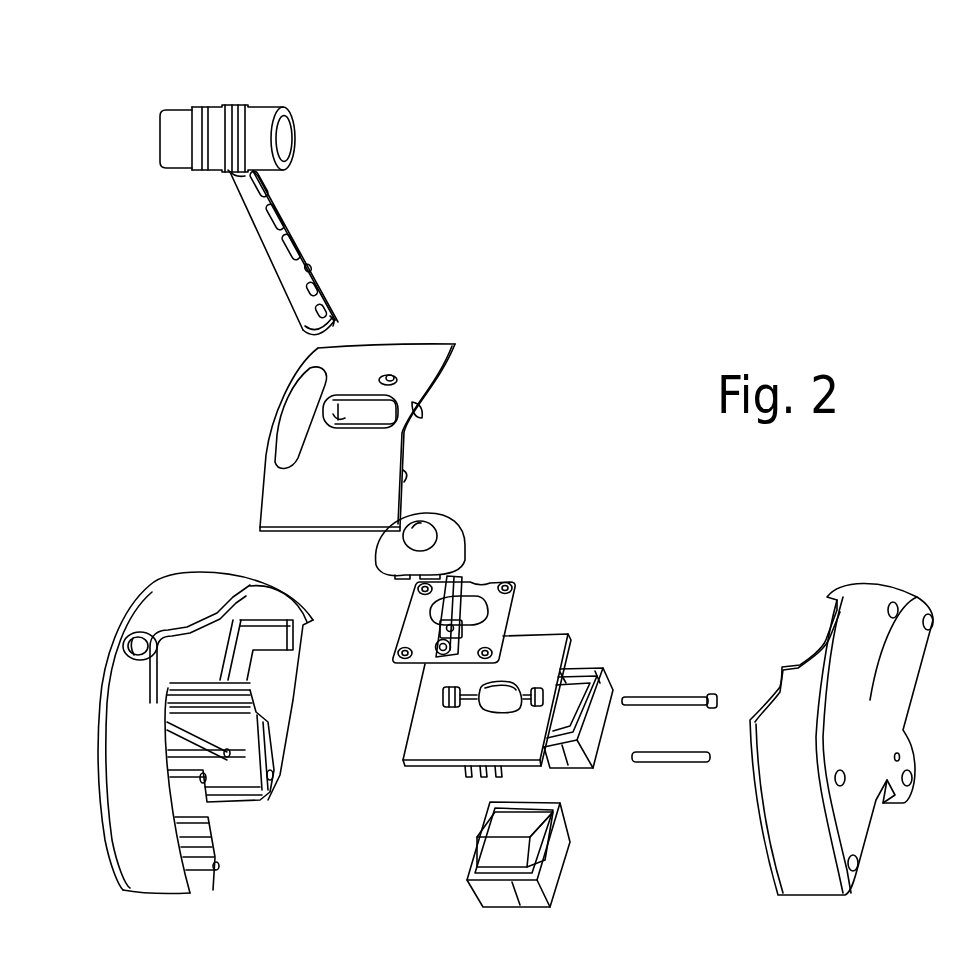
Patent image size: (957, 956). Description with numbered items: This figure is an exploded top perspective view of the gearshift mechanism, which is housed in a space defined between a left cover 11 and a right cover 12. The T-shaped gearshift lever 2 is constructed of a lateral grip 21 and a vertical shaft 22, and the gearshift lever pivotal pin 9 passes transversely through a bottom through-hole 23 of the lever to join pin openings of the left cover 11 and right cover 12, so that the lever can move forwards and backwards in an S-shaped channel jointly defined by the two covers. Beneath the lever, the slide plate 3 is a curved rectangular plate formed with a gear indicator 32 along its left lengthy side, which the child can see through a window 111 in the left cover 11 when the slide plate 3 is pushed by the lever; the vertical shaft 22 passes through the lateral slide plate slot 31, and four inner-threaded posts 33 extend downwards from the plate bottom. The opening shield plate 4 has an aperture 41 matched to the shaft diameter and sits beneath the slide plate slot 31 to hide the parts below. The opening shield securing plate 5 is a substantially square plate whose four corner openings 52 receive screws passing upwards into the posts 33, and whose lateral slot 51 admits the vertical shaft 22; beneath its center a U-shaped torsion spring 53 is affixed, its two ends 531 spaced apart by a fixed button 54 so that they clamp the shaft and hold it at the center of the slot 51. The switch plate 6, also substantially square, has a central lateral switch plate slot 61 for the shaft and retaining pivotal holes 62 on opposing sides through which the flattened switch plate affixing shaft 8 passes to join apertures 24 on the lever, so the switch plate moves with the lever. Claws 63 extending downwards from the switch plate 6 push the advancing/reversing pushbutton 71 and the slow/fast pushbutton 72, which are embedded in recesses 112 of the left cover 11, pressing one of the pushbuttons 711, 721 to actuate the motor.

The gearshift lever 2 is at (283, 96).
The lateral grip 21 is at (276, 131).
The vertical shaft 22 is at (290, 285).
The bottom through-hole 23 is at (334, 317).
The apertures 24 is at (305, 270).
The slide plate 3 is at (425, 325).
The slide plate slot 31 is at (365, 425).
The gear indicator 32 is at (296, 416).
The posts 33 is at (421, 415).
The opening shield plate 4 is at (470, 508).
The aperture 41 is at (410, 536).
The opening shield securing plate 5 is at (510, 565).
The lateral slot 51 is at (432, 612).
The corner openings 52 is at (511, 585).
The torsion spring 53 is at (437, 650).
The ends 531 is at (456, 590).
The fixed button 54 is at (448, 628).
The switch plate 6 is at (560, 620).
The switch plate slot 61 is at (488, 701).
The retaining pivotal holes 62 is at (447, 697).
The claws 63 is at (478, 768).
The advancing/reversing pushbutton 71 is at (557, 870).
The pushbutton 711 is at (488, 850).
The slow/fast pushbutton 72 is at (598, 746).
The pushbutton 721 is at (578, 668).
The switch plate affixing shaft 8 is at (666, 698).
The gearshift lever pivotal pin 9 is at (659, 757).
The left cover 11 is at (115, 765).
The window 111 is at (130, 645).
The recesses 112 is at (230, 813).
The right cover 12 is at (763, 795).